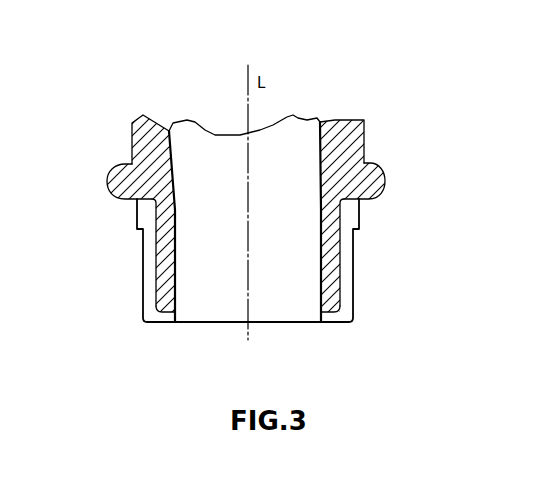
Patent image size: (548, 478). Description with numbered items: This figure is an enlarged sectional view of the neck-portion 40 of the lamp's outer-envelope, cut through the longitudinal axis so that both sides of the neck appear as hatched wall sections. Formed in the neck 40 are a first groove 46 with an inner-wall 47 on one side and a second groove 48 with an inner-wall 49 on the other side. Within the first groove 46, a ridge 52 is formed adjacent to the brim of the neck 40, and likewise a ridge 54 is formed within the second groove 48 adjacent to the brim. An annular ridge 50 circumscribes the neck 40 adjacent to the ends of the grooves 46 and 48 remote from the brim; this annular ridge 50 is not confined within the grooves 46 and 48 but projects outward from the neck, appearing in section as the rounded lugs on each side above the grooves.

The neck-portion 40 is at (181, 92).
The first groove 46 is at (146, 211).
The inner-wall 47 is at (157, 247).
The second groove 48 is at (345, 217).
The inner-wall 49 is at (340, 247).
The annular ridge 50 is at (112, 175).
The ridge 52 is at (150, 303).
The ridge 54 is at (345, 300).